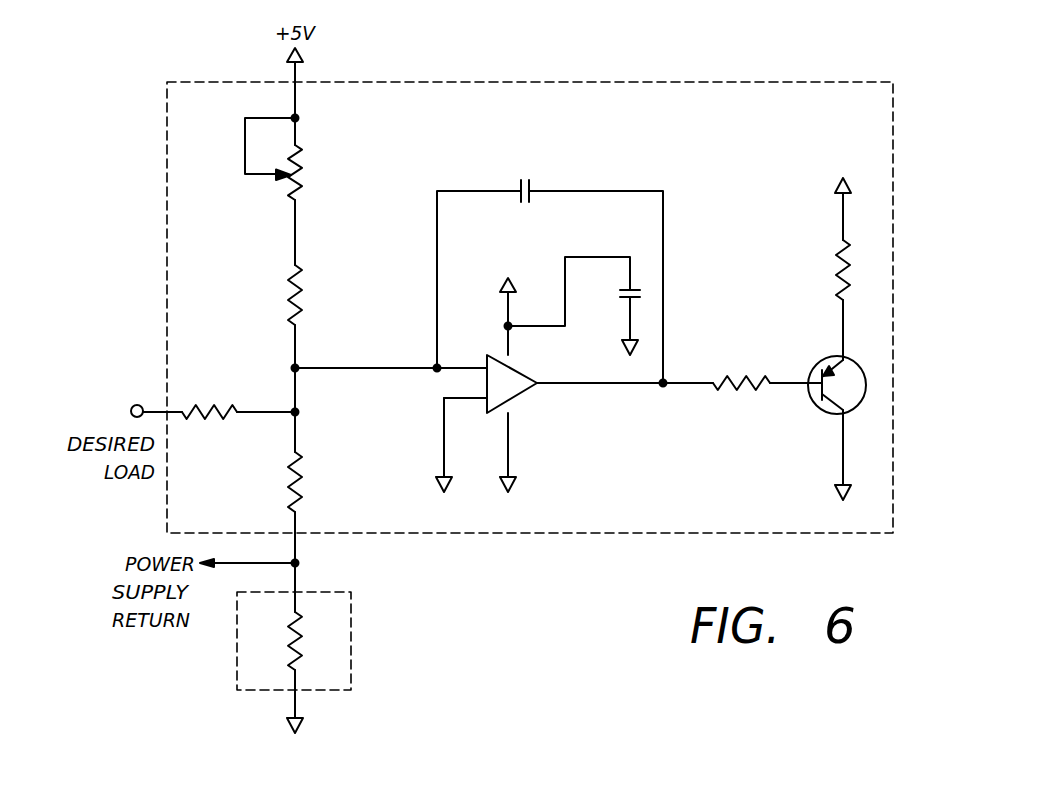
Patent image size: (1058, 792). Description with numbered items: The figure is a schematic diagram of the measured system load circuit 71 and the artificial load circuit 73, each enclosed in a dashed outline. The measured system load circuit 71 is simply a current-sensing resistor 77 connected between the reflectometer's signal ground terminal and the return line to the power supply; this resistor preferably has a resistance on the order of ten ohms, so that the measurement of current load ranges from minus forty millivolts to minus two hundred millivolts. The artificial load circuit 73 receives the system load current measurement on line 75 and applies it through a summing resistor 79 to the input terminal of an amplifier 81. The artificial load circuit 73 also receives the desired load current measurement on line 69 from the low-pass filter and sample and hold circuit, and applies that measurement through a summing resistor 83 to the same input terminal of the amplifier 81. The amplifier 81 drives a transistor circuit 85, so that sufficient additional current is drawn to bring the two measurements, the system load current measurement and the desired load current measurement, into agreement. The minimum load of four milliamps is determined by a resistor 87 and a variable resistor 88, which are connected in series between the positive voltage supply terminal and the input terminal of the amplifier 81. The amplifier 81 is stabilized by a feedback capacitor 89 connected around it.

The line 69 is at (150, 405).
The summing resistor 83 is at (203, 405).
The variable resistor 88 is at (303, 180).
The resistor 87 is at (302, 292).
The summing resistor 79 is at (302, 480).
The line 75 is at (297, 573).
The current-sensing resistor 77 is at (300, 640).
The amplifier 81 is at (510, 388).
The feedback capacitor 89 is at (533, 186).
The transistor circuit 85 is at (878, 368).
The artificial load circuit 73 is at (530, 307).
The measured system load circuit 71 is at (342, 681).